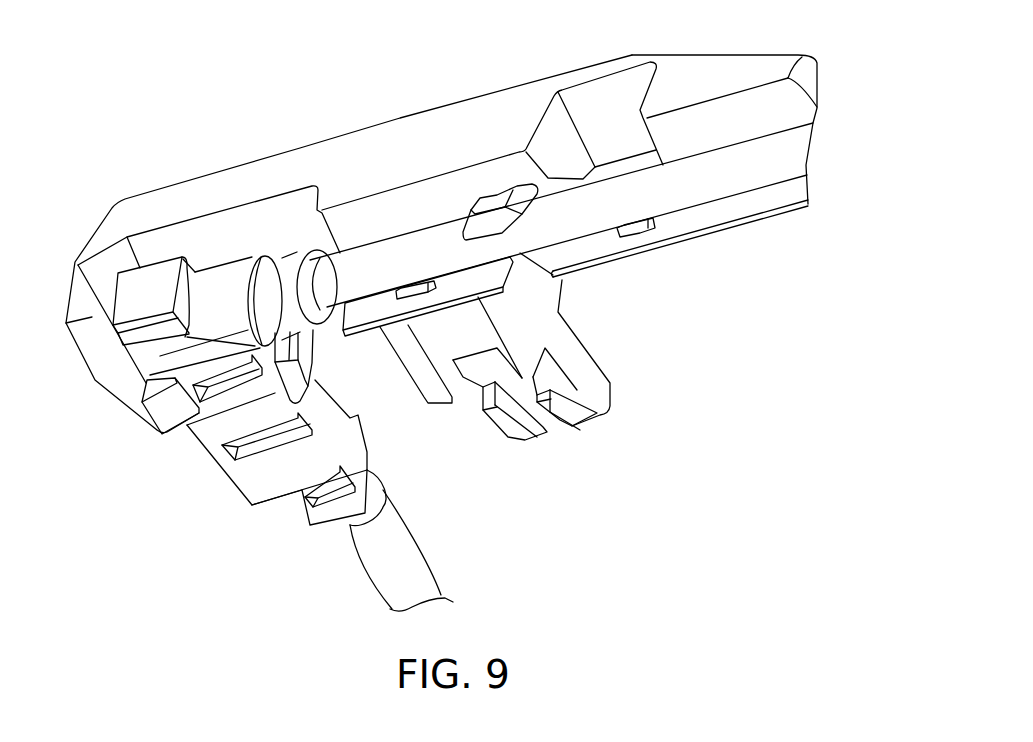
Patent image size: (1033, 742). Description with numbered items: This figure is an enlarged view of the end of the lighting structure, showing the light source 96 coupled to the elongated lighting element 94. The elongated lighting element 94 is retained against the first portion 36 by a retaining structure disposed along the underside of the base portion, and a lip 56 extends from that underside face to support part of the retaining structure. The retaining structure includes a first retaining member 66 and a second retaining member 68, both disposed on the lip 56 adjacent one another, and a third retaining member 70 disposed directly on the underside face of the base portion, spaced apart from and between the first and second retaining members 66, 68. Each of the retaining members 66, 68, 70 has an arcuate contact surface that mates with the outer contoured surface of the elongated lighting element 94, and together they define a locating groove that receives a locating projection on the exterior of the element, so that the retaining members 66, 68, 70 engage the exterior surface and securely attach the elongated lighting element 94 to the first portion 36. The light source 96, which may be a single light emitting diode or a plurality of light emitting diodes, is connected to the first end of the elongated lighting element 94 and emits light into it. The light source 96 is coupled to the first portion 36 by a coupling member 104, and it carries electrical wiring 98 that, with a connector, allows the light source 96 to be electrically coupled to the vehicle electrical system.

The first portion 36 is at (400, 117).
The third retaining member 70 is at (490, 201).
The elongated lighting element 94 is at (717, 177).
The lip 56 is at (770, 197).
The first retaining member 66 is at (410, 298).
The second retaining member 68 is at (632, 235).
The coupling member 104 is at (170, 437).
The light source 96 is at (268, 503).
The electrical wiring 98 is at (423, 540).